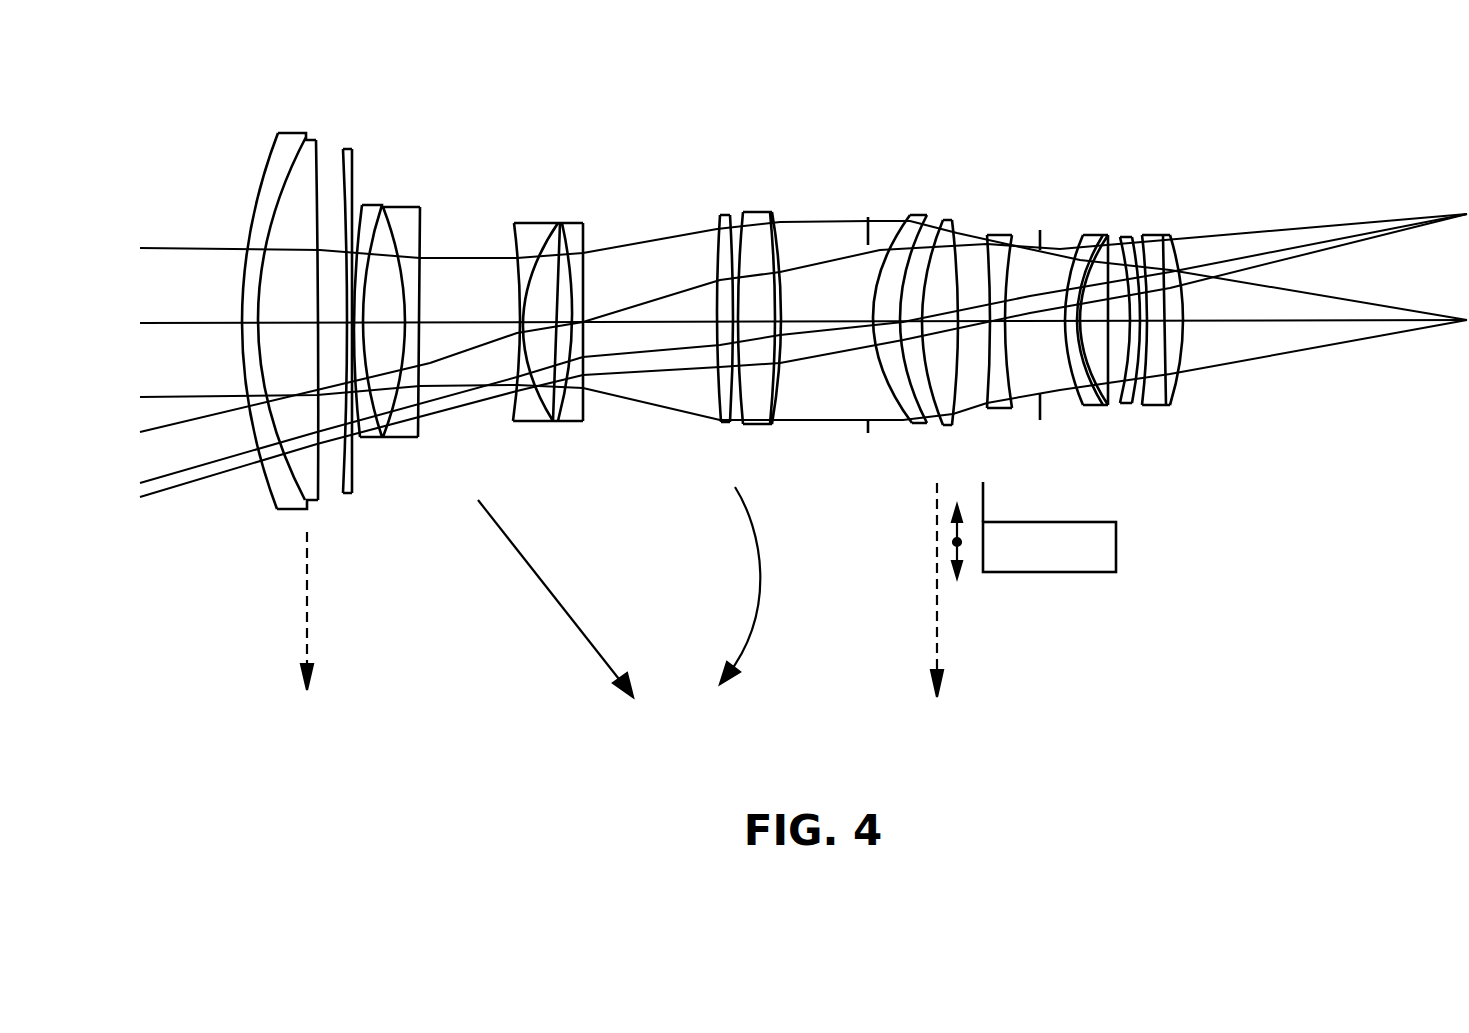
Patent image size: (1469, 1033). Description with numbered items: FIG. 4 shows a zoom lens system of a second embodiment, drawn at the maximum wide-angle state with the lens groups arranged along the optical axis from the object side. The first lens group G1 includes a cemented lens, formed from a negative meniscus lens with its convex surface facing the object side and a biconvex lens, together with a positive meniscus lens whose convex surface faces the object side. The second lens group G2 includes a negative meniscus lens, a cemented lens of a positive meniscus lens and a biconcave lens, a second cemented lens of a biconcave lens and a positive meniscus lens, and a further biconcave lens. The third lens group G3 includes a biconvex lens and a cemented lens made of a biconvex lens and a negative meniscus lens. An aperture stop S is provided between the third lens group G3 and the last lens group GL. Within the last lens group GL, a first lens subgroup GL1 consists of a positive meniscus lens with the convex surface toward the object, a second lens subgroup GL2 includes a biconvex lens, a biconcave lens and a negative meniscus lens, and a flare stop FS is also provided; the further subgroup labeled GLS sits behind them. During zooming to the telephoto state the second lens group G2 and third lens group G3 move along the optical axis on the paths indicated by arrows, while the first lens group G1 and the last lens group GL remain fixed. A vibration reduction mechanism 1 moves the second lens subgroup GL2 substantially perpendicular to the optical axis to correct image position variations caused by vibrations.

The first lens group G1 is at (353, 124).
The second lens group G2 is at (357, 443).
The third lens group G3 is at (700, 194).
The aperture stop S is at (868, 217).
The last lens group GL is at (842, 93).
The first lens subgroup GL1 is at (925, 220).
The second lens subgroup GL2 is at (942, 442).
The flare stop FS is at (1040, 230).
The shift lens sub-group GLS is at (1180, 218).
The vibration reduction mechanism 1 is at (1116, 548).